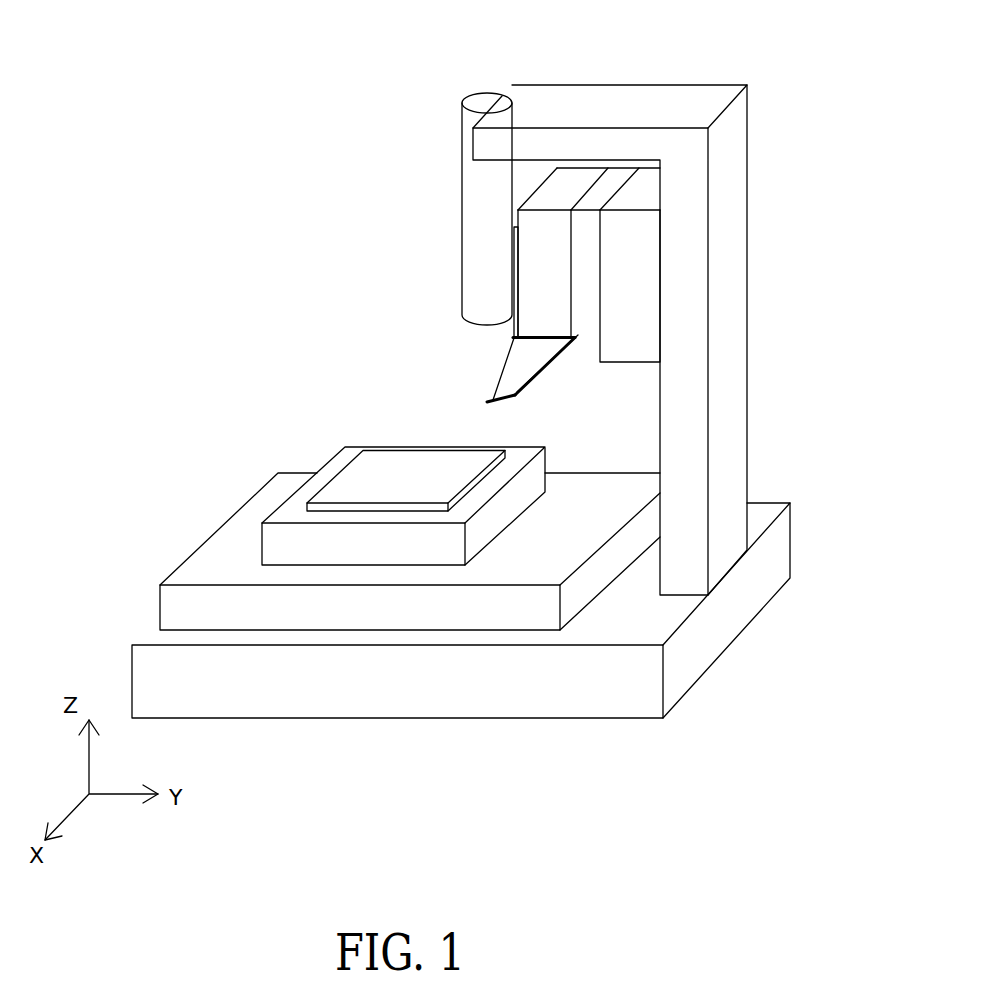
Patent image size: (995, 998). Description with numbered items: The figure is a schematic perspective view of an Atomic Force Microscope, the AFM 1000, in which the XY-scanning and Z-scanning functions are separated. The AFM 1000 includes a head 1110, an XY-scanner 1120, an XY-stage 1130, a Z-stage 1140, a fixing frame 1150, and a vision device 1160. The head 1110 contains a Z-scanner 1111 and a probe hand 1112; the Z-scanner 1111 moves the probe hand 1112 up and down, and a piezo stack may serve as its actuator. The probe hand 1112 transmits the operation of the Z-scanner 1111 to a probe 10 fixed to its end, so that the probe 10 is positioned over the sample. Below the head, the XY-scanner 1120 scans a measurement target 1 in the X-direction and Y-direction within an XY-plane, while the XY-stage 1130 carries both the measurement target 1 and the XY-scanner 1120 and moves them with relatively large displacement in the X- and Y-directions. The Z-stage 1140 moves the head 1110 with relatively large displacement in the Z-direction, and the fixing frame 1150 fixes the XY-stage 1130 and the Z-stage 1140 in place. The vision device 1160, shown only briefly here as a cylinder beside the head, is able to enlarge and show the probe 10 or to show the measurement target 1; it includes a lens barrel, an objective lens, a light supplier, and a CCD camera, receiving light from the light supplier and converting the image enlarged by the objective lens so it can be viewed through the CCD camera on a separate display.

The AFM 1000 is at (133, 83).
The measurement target 1 is at (362, 467).
The probe 10 is at (487, 400).
The head 1110 is at (503, 217).
The Z-scanner 1111 is at (553, 223).
The probe hand 1112 is at (515, 368).
The XY-scanner 1120 is at (333, 470).
The XY-stage 1130 is at (207, 557).
The Z-stage 1140 is at (632, 227).
The fixing frame 1150 is at (640, 703).
The vision device 1160 is at (475, 238).